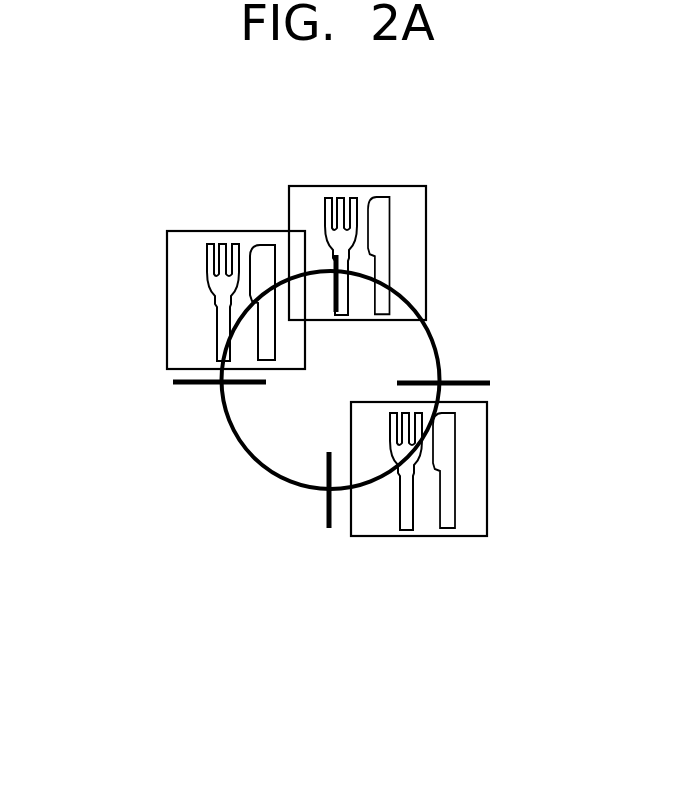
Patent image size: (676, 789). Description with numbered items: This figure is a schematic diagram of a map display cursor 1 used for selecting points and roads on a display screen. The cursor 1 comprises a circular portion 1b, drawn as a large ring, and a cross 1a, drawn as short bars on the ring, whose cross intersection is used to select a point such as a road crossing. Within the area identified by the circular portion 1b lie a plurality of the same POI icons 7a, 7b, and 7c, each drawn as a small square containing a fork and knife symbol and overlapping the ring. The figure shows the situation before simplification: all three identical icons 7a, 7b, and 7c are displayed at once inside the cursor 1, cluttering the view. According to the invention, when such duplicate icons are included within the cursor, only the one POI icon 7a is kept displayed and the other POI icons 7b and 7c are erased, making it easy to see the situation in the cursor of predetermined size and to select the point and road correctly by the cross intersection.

The cursor 1 is at (269, 434).
The cross 1a is at (327, 512).
The circular portion 1b is at (252, 463).
The POI icon 7a is at (487, 437).
The POI icon 7b is at (190, 230).
The POI icon 7c is at (370, 186).